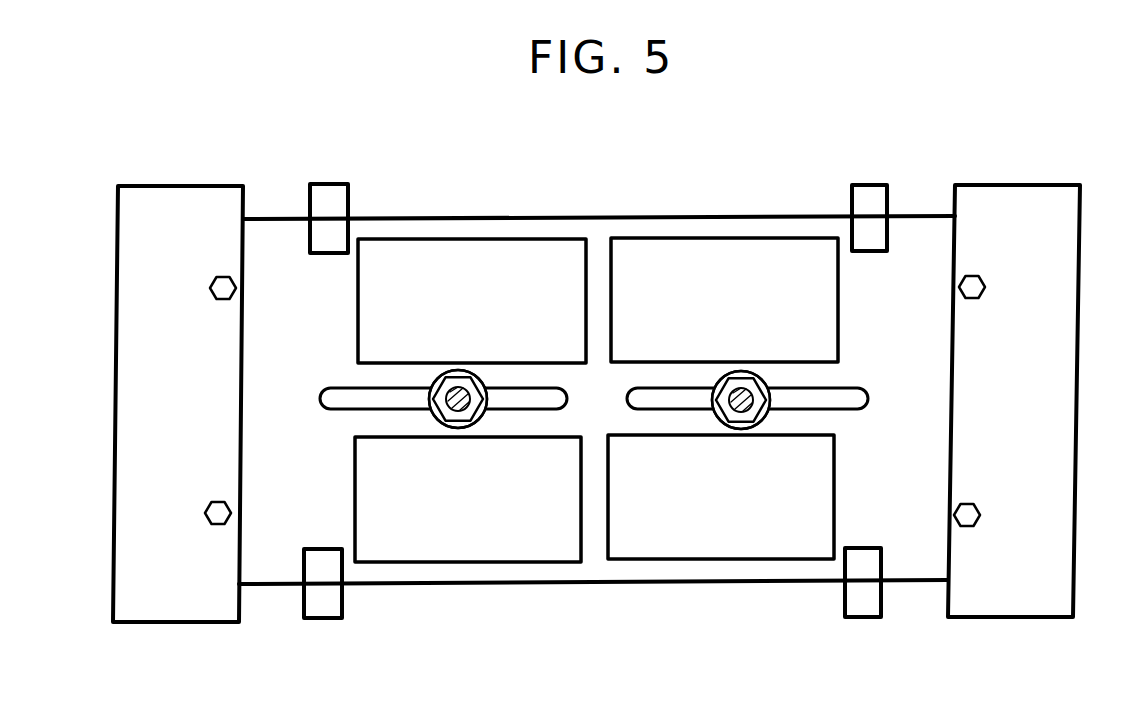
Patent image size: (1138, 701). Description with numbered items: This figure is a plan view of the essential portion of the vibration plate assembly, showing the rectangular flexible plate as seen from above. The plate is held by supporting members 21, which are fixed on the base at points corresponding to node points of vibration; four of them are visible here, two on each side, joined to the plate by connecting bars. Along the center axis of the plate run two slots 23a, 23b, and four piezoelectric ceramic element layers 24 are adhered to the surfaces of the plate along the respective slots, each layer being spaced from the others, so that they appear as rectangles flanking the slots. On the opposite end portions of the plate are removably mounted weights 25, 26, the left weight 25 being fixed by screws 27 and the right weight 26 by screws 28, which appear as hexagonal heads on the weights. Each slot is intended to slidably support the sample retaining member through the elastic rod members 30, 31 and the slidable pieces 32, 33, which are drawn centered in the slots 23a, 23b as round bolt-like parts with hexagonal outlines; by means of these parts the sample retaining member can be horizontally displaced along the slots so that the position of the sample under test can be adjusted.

The supporting member 21 is at (332, 196).
The slot 23a is at (335, 405).
The slot 23b is at (830, 402).
The piezoelectric ceramic element layer 24 is at (470, 258).
The weight 25 is at (135, 405).
The weight 26 is at (1045, 385).
The screw 27 is at (213, 290).
The screw 28 is at (972, 282).
The elastic rod member 30 is at (458, 413).
The elastic rod member 31 is at (741, 413).
The slidable piece 32 is at (441, 376).
The slidable piece 33 is at (765, 380).